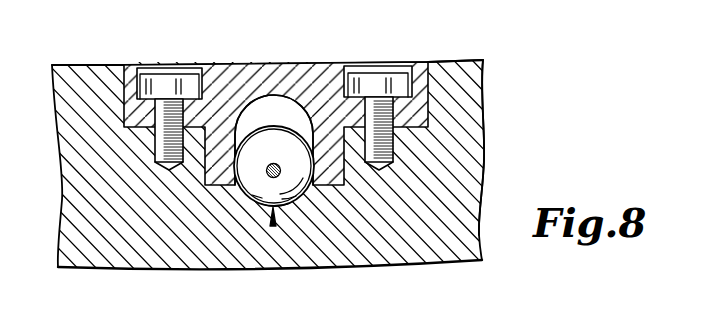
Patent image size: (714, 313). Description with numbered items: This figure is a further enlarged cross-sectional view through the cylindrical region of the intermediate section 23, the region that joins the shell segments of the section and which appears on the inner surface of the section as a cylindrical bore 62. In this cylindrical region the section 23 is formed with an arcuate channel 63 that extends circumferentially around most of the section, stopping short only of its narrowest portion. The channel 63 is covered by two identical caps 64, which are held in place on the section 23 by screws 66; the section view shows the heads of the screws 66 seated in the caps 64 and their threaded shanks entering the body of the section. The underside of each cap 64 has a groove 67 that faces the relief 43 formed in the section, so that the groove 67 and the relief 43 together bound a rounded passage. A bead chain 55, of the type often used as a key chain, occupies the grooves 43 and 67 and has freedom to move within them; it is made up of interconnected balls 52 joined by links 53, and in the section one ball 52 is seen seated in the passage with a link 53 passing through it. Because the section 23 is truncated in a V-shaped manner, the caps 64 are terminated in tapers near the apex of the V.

The intermediate section 23 is at (490, 157).
The relief 43 is at (285, 217).
The balls 52 is at (305, 200).
The links 53 is at (268, 175).
The bead chain 55 is at (273, 224).
The cylindrical bore 62 is at (443, 64).
The arcuate channel 63 is at (467, 72).
The caps 64 is at (233, 72).
The screws 66 is at (165, 82).
The groove 67 is at (287, 111).